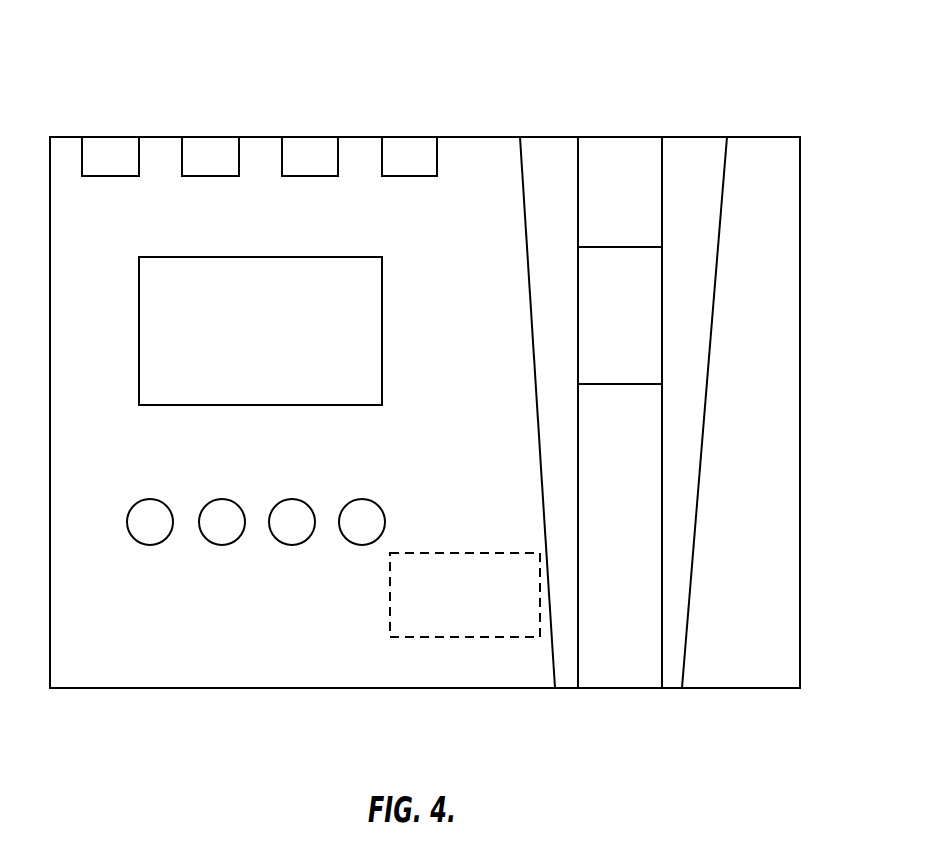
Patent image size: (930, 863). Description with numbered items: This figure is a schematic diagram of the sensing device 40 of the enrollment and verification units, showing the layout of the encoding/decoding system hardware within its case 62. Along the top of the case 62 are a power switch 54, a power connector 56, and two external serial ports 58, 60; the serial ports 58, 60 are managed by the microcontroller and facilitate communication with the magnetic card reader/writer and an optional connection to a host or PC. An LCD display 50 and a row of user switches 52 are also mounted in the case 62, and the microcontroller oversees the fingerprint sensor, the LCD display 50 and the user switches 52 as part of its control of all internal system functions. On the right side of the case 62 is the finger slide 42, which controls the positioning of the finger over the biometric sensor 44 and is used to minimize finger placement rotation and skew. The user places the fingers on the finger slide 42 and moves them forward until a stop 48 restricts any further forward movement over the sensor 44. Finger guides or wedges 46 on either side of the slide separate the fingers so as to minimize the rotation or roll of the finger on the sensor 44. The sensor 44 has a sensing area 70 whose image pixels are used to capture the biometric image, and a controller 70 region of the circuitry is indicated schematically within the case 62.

The portable electronic device 40 is at (722, 100).
The finger slide 42 is at (643, 560).
The biometric sensor 44 is at (635, 328).
The finger guides/wedges 46 is at (537, 248).
The stop 48 is at (628, 165).
The LCD display 50 is at (382, 365).
The user switches 52 is at (362, 545).
The power switch 54 is at (112, 148).
The power connector 56 is at (217, 148).
The serial port 58 is at (322, 148).
The serial port 60 is at (423, 162).
The case 62 is at (437, 673).
The sensing area 70 is at (427, 552).